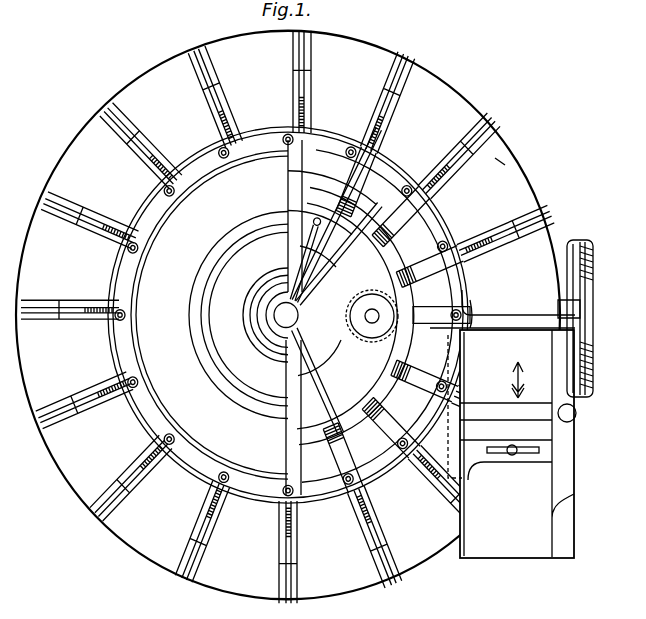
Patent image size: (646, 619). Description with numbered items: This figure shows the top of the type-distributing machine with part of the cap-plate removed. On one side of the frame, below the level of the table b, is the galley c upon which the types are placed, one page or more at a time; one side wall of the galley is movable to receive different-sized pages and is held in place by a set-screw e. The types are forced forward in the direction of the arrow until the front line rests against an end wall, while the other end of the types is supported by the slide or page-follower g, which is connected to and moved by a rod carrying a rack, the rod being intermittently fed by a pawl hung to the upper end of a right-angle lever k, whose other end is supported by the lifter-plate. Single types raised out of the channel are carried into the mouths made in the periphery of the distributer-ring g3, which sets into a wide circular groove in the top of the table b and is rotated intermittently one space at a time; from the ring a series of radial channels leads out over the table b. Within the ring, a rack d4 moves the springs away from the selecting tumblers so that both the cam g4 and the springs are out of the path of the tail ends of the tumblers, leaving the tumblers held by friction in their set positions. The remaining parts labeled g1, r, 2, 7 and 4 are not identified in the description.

The table b is at (288, 317).
The galley c is at (517, 444).
The set-screw e is at (567, 413).
The slide or page-follower g is at (383, 280).
The adjusting screw g1 is at (506, 445).
The distributer-ring g3 is at (500, 307).
The cam g4 is at (566, 318).
The rack d4 is at (410, 105).
The right-angle lever k is at (455, 406).
The rod r is at (335, 214).
The pawl 2 is at (389, 315).
The pawl 7 is at (427, 351).
The lever 4 is at (337, 319).